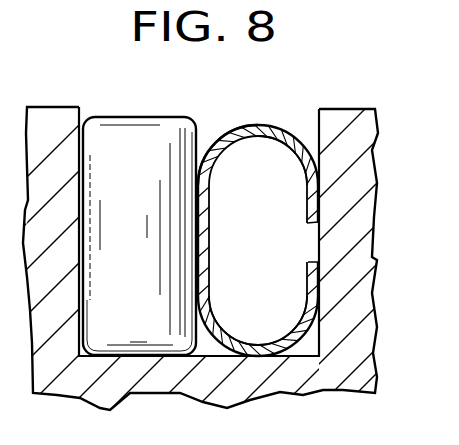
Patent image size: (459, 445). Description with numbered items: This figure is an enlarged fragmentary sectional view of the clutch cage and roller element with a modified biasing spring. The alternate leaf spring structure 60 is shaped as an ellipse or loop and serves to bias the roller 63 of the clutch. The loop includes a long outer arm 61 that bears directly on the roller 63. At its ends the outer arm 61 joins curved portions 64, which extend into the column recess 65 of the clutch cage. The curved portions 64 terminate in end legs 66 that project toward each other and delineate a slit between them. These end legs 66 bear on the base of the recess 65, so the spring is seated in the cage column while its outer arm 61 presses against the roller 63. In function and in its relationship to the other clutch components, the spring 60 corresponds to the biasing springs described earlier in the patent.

The leaf spring structure 60 is at (254, 110).
The outer arm 61 is at (220, 177).
The roller 63 is at (142, 116).
The curved portions 64 is at (265, 343).
The column recess 65 is at (267, 150).
The end legs 66 is at (307, 203).